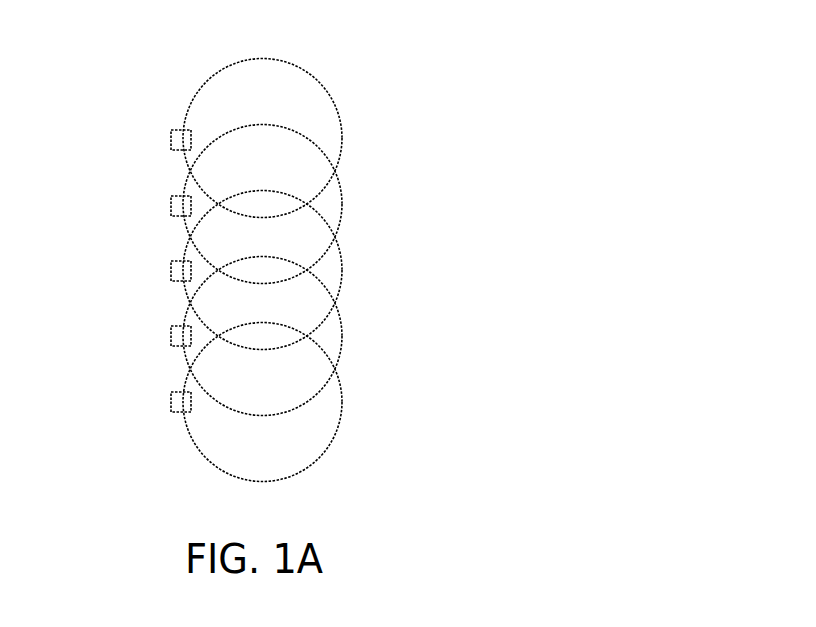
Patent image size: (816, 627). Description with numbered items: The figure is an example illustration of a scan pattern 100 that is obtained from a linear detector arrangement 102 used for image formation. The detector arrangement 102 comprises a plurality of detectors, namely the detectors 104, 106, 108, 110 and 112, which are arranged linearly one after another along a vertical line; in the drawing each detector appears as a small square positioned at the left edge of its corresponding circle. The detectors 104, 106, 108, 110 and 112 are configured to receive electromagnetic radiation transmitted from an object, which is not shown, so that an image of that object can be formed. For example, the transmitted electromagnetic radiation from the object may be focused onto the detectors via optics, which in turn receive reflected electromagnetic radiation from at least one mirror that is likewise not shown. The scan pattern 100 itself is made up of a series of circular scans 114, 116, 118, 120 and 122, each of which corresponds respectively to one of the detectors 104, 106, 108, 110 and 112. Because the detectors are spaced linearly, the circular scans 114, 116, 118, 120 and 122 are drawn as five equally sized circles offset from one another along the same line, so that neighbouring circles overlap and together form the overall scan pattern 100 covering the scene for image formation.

The scan pattern 100 is at (407, 43).
The linear detector arrangement 102 is at (167, 120).
The detector 104 is at (176, 147).
The detector 106 is at (176, 205).
The detector 108 is at (176, 272).
The detector 110 is at (176, 338).
The detector 112 is at (176, 404).
The circular scan 114 is at (343, 122).
The circular scan 116 is at (343, 192).
The circular scan 118 is at (343, 270).
The circular scan 120 is at (343, 333).
The circular scan 122 is at (343, 417).